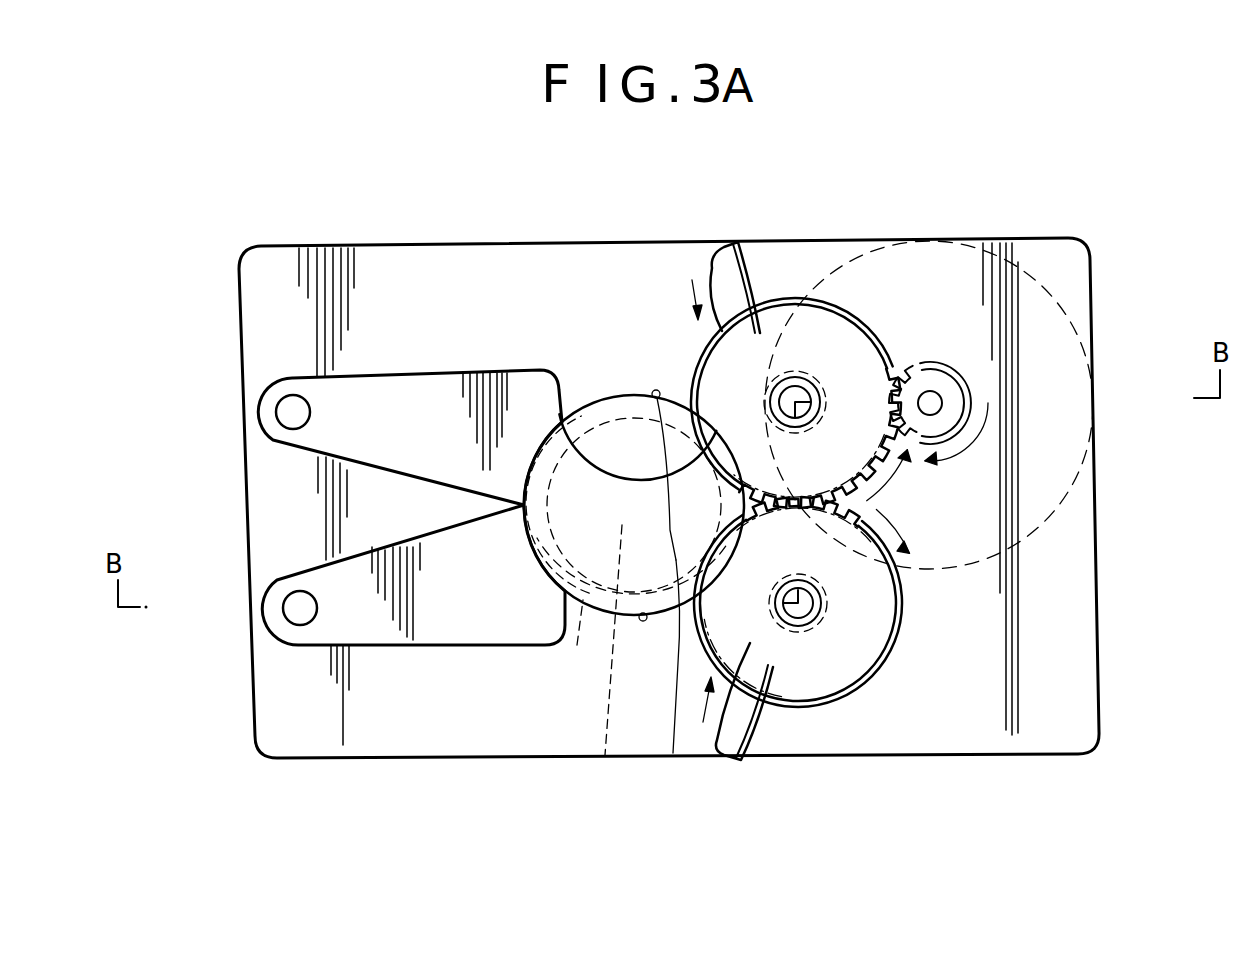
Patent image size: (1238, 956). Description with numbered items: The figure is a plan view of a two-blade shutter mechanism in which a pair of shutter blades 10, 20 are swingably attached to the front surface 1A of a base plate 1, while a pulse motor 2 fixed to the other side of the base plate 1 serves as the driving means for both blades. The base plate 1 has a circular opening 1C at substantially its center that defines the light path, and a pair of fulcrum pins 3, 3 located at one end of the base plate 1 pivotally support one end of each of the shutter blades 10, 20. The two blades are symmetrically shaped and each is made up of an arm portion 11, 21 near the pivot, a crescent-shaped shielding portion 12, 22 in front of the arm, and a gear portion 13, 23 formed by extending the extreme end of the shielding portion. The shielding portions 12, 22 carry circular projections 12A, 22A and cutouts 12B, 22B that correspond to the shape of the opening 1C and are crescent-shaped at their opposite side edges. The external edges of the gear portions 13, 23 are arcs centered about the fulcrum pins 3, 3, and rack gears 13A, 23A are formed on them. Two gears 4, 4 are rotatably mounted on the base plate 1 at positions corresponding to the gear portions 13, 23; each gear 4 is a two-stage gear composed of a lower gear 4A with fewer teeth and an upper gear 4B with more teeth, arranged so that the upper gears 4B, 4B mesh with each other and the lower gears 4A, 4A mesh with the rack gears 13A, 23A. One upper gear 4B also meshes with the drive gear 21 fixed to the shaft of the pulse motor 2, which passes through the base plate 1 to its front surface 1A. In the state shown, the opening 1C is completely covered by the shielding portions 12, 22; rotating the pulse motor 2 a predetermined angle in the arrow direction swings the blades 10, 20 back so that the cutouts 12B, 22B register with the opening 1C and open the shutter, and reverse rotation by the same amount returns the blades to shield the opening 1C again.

The base plate 1 is at (276, 246).
The front surface 1A is at (1083, 610).
The circular opening 1C is at (561, 546).
The pulse motor 2 is at (1027, 275).
The fulcrum pins 3 is at (290, 415).
The gears 4 is at (980, 190).
The lower gear 4A is at (810, 387).
The upper gear 4B is at (805, 395).
The shutter blade 10 is at (418, 378).
The arm portion 11 is at (317, 383).
The shielding portion 12 is at (640, 201).
The circular projection 12A is at (676, 560).
The cutout 12B is at (606, 560).
The gear portion 13 is at (716, 243).
The rack gear 13A is at (748, 271).
The shutter blade 20 is at (372, 653).
The arm portion 21 is at (325, 634).
The shielding portion 22 is at (717, 792).
The circular projection 22A is at (673, 679).
The cutout 22B is at (596, 662).
The gear portion 23 is at (750, 768).
The rack gear 23A is at (768, 720).